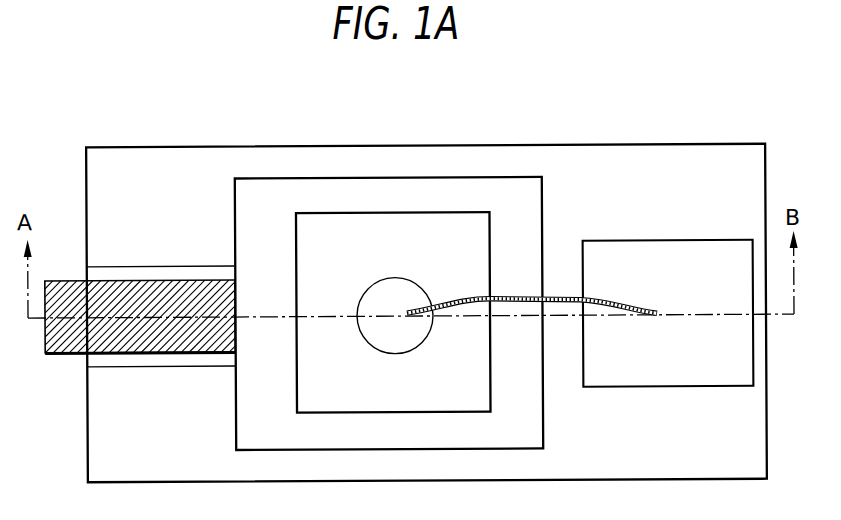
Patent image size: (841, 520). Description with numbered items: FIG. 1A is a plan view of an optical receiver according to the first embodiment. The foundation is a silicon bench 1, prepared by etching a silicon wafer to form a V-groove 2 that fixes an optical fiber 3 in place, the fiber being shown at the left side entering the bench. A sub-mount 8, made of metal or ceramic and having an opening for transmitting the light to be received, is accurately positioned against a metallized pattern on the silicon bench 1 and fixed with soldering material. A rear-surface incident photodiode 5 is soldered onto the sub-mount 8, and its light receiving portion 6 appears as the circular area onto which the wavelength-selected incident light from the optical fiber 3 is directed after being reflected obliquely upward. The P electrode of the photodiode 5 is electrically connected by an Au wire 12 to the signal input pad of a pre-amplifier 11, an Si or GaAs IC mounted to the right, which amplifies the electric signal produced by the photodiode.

The silicon bench 1 is at (642, 183).
The V-groove 2 is at (132, 272).
The optical fiber 3 is at (188, 277).
The photodiode 5 is at (320, 242).
The light receiving portion 6 is at (399, 290).
The sub-mount 8 is at (522, 198).
The pre-amplifier 11 is at (696, 254).
The Au wire 12 is at (563, 298).